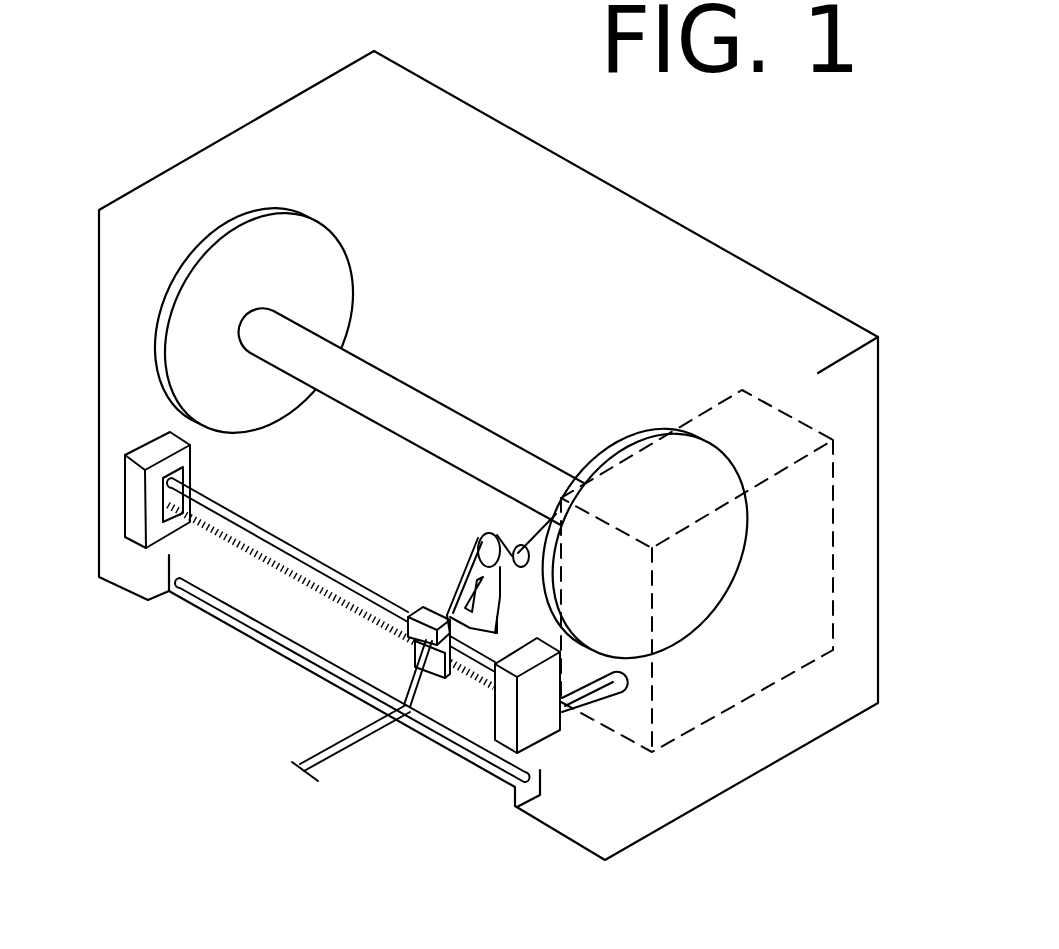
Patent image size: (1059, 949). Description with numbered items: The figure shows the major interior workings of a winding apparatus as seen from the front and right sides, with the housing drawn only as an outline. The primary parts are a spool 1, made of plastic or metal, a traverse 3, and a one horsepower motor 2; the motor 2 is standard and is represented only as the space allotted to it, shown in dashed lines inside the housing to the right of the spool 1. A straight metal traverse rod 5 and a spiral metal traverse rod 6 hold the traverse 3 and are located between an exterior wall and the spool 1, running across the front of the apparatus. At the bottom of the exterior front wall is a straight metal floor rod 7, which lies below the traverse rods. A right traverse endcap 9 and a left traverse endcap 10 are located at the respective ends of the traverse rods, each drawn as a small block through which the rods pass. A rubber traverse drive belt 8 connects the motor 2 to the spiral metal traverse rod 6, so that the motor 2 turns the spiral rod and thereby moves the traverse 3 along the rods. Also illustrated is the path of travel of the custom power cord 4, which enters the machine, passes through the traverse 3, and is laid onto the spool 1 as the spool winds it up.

The spool 1 is at (163, 318).
The motor 2 is at (800, 540).
The traverse 3 is at (445, 587).
The custom power cord 4 is at (352, 740).
The straight metal traverse rod 5 is at (253, 523).
The spiral metal traverse rod 6 is at (257, 560).
The straight metal floor rod 7 is at (253, 620).
The rubber traverse drive belt 8 is at (622, 700).
The right traverse endcap 9 is at (502, 742).
The left traverse endcap 10 is at (135, 515).